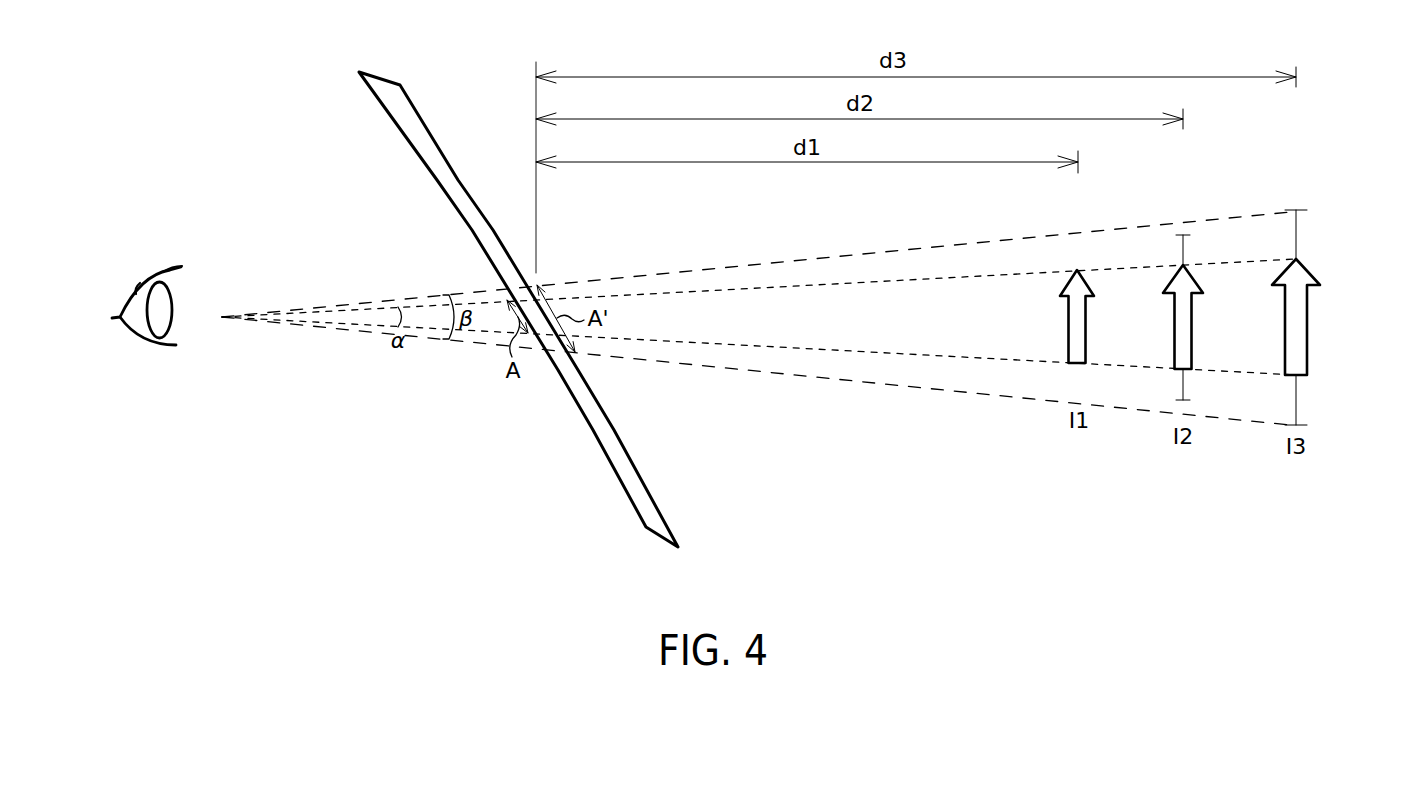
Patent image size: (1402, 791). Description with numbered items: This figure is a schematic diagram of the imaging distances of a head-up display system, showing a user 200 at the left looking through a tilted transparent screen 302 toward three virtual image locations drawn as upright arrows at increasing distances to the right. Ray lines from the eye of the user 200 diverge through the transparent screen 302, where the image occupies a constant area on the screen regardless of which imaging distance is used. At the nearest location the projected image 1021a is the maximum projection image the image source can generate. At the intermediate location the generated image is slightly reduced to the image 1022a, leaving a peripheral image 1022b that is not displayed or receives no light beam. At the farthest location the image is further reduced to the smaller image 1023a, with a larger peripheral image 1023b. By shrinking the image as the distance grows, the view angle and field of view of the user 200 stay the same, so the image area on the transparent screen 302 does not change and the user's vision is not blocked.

The user 200 is at (150, 283).
The transparent screen 302 is at (405, 117).
The image 1021a is at (1080, 367).
The image 1022a is at (1192, 352).
The peripheral image 1022b is at (1186, 253).
The image 1023a is at (1298, 350).
The peripheral image 1023b is at (1297, 237).